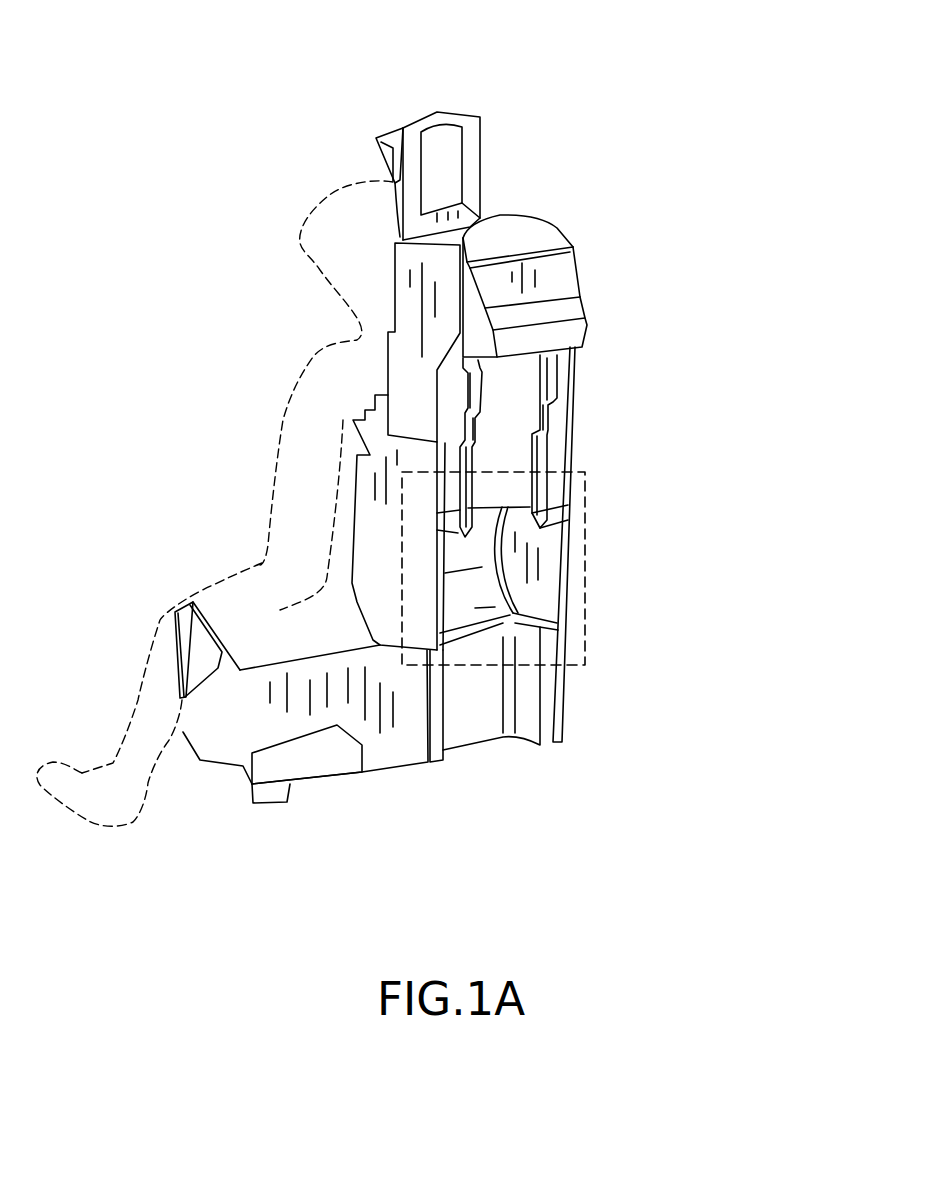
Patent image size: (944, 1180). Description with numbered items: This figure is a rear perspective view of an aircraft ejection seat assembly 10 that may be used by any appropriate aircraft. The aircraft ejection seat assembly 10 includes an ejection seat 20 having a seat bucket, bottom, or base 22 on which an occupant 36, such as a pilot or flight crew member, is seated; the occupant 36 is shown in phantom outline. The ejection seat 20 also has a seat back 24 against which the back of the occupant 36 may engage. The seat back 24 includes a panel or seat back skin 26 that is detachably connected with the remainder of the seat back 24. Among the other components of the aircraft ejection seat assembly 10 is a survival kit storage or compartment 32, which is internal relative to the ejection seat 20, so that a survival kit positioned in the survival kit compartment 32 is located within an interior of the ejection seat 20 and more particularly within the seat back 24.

The aircraft ejection seat assembly 10 is at (630, 95).
The ejection seat 20 is at (585, 215).
The seat bucket, bottom, or base 22 is at (227, 733).
The seat back 24 is at (610, 438).
The seat back skin 26 is at (473, 593).
The survival kit compartment 32 is at (458, 588).
The occupant 36 is at (313, 398).